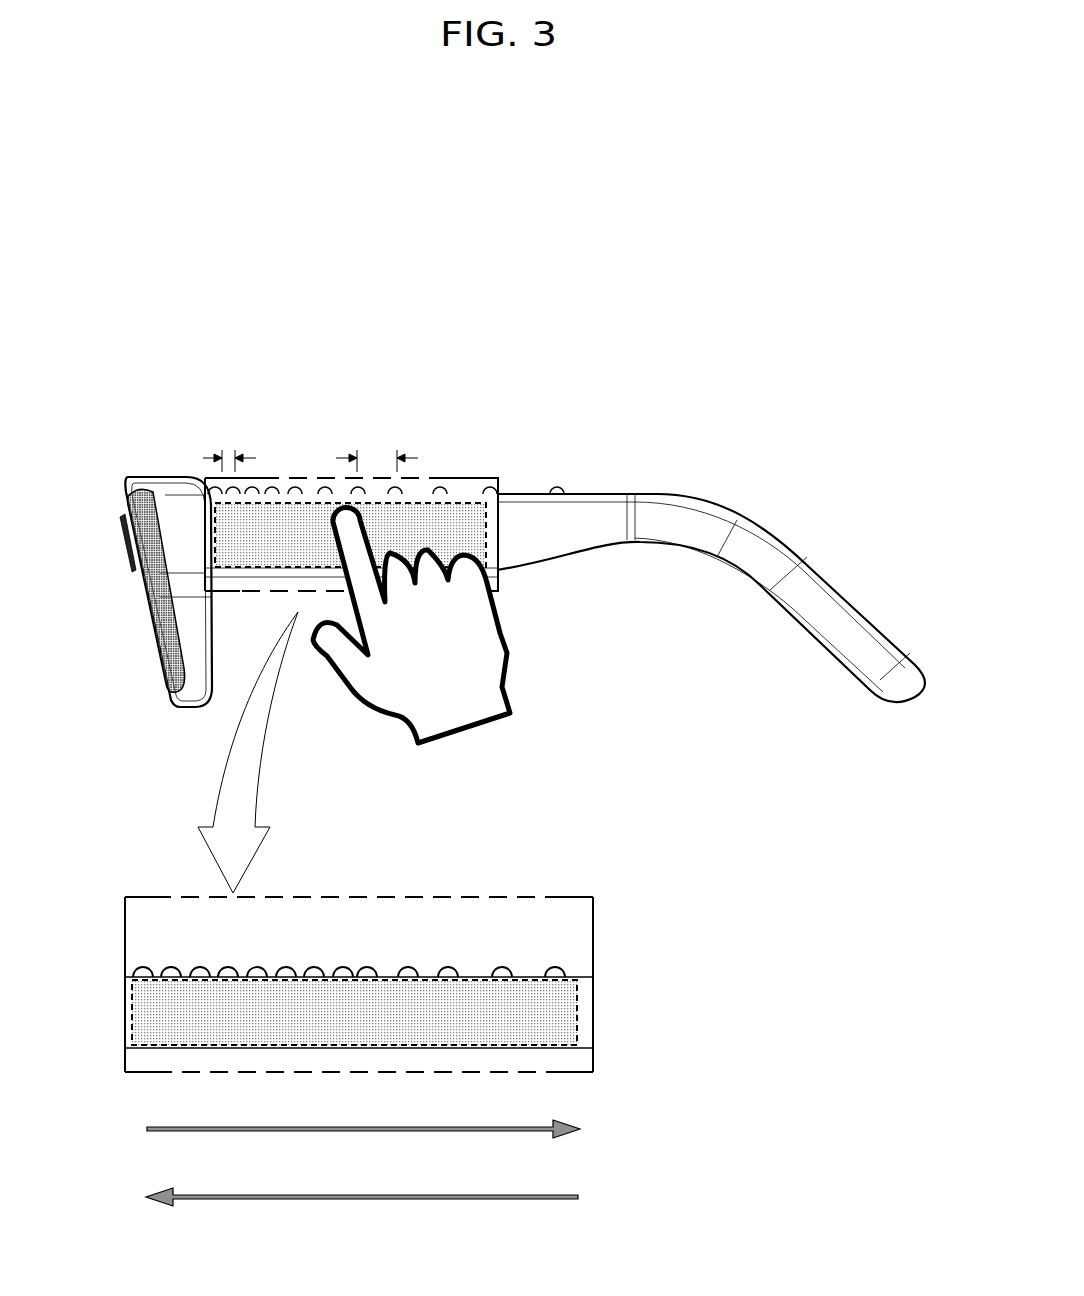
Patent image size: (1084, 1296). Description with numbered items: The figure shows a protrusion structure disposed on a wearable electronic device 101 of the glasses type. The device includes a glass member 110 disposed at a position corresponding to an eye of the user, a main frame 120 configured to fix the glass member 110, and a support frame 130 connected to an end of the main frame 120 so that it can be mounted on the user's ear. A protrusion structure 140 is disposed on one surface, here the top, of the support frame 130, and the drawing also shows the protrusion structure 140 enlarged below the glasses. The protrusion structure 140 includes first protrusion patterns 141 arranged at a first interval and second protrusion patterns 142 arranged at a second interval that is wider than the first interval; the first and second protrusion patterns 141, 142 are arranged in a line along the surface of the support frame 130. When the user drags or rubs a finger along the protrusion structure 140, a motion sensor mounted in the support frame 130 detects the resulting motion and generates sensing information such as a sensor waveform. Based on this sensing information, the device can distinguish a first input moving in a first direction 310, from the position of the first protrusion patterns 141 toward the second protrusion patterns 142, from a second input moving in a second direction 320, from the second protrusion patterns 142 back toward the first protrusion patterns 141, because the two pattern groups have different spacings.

The wearable electronic device 101 is at (716, 274).
The glass member 110 is at (160, 577).
The main frame 120 is at (167, 480).
The support frame 130 is at (682, 512).
The protrusion structure 140 is at (735, 752).
The first protrusion patterns 141 is at (343, 965).
The second protrusion patterns 142 is at (575, 965).
The first direction 310 is at (584, 1130).
The second direction 320 is at (584, 1196).